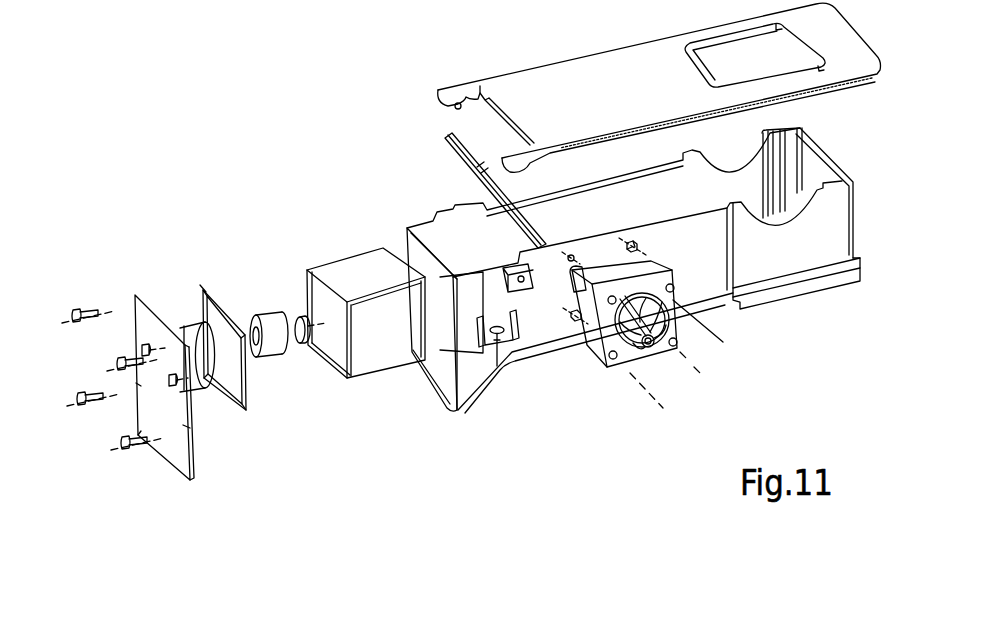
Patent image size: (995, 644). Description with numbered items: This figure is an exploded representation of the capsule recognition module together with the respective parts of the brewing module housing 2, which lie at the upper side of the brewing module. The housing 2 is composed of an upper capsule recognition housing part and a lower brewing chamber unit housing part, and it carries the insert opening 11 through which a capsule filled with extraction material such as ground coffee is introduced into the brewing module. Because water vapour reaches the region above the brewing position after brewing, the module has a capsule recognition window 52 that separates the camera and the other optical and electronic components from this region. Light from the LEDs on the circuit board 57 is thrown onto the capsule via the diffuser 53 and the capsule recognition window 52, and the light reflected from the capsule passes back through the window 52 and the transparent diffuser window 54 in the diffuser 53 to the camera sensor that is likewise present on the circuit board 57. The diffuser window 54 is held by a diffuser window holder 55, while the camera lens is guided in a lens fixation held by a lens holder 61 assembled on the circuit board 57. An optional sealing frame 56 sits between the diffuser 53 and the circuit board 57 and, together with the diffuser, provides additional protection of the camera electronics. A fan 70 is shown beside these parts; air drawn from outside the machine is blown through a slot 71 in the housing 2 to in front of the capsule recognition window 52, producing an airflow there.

The brewing module housing 2 is at (540, 90).
The insert opening 11 is at (712, 78).
The capsule recognition window 52 is at (443, 132).
The diffuser 53 is at (352, 387).
The diffuser window 54 is at (308, 350).
The diffuser window holder 55 is at (265, 363).
The sealing frame 56 is at (248, 412).
The circuit board 57 is at (188, 490).
The lens holder 61 is at (192, 330).
The fan 70 is at (607, 368).
The slot 71 is at (572, 288).